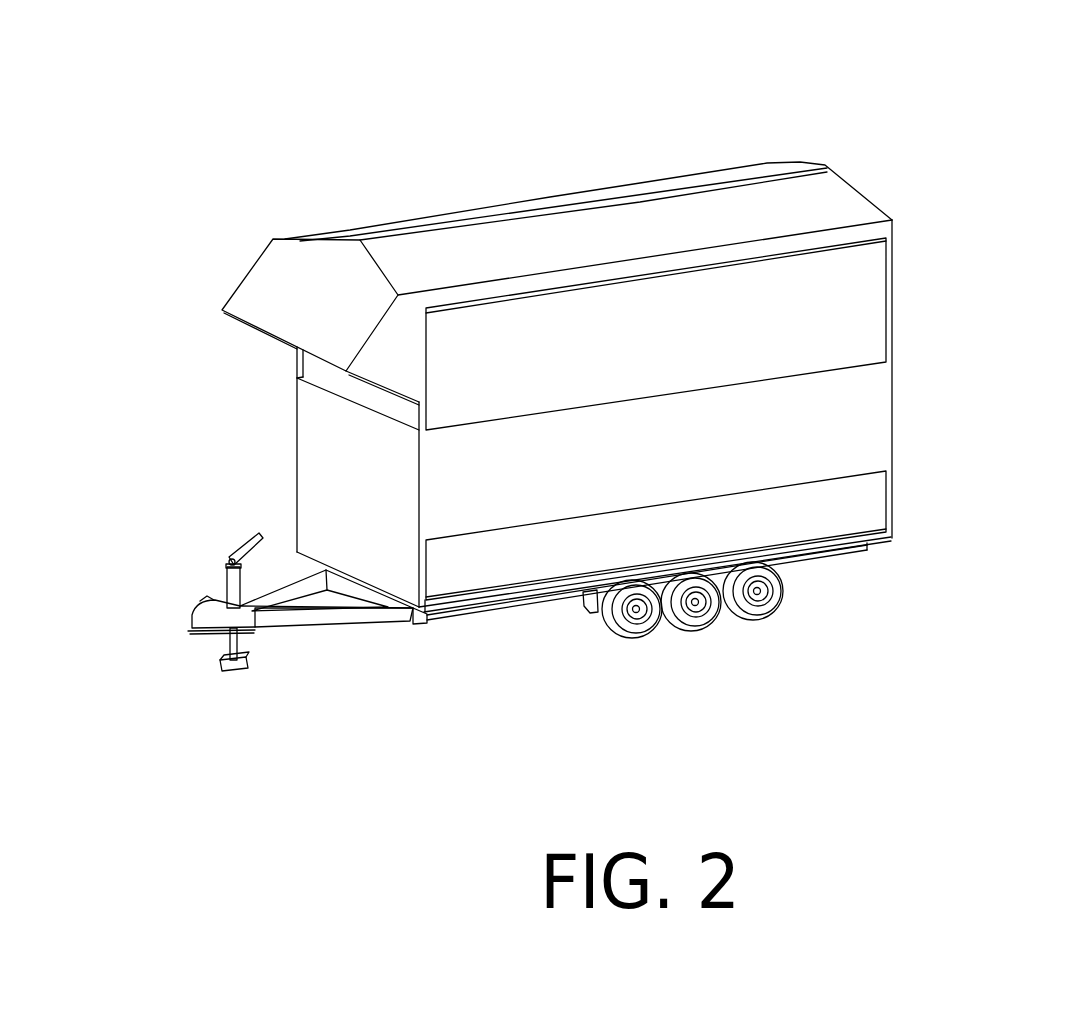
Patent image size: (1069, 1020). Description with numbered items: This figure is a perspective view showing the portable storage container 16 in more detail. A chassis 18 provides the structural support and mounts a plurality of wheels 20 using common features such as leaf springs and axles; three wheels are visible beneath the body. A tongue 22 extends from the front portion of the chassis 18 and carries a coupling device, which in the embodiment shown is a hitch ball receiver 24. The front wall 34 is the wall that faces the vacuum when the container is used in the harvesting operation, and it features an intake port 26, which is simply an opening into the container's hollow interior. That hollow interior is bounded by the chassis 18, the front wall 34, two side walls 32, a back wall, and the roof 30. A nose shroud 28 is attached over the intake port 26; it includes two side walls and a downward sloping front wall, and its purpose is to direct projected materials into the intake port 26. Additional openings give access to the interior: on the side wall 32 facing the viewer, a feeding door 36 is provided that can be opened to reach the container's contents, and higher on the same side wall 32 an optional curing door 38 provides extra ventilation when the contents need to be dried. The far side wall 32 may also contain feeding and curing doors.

The storage container 16 is at (517, 113).
The chassis 18 is at (832, 552).
The wheels 20 is at (755, 594).
The tongue 22 is at (307, 620).
The hitch ball receiver 24 is at (215, 618).
The intake port 26 is at (362, 390).
The nose shroud 28 is at (312, 298).
The roof 30 is at (737, 212).
The side wall 32 is at (858, 422).
The front wall 34 is at (360, 463).
The feeding door 36 is at (853, 497).
The curing door 38 is at (835, 295).